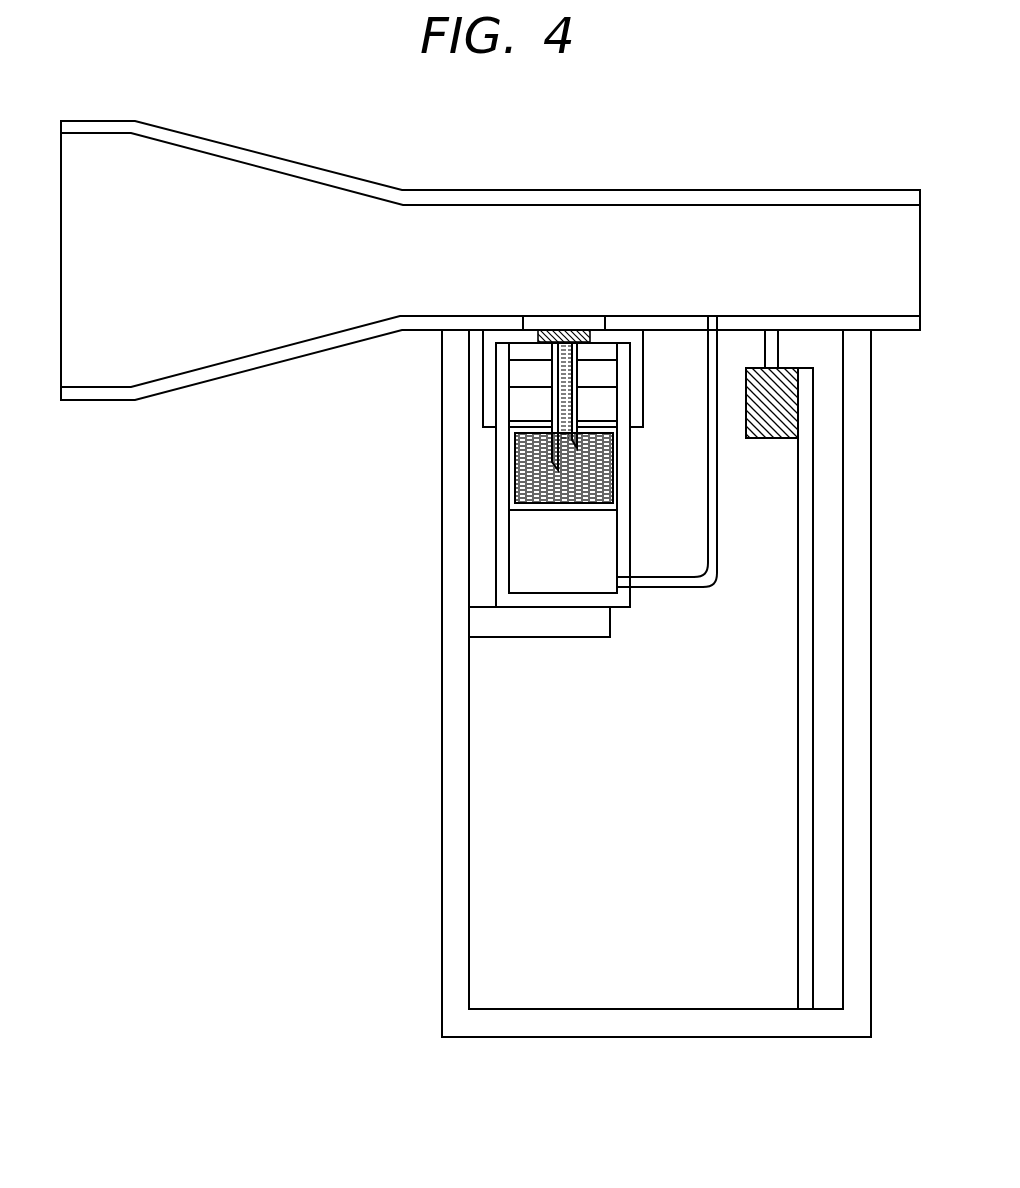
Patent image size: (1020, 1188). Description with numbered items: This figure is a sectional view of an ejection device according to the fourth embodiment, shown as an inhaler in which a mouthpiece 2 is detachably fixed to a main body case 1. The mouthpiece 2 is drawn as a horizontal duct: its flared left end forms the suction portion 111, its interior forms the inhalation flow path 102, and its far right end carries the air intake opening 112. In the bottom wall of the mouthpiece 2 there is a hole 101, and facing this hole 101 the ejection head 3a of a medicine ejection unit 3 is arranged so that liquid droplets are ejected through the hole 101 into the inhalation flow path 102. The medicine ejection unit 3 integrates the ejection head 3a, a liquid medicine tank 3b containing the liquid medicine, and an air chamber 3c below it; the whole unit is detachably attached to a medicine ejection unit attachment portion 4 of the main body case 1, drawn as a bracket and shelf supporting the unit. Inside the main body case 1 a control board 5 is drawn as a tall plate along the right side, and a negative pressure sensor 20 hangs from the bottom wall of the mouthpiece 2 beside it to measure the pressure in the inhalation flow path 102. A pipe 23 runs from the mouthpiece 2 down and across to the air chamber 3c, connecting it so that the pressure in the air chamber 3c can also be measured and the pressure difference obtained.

The main body case 1 is at (447, 870).
The mouthpiece 2 is at (318, 177).
The medicine ejection unit 3 is at (346, 381).
The ejection head 3a is at (536, 331).
The liquid medicine tank 3b is at (520, 451).
The air chamber 3c is at (528, 529).
The medicine ejection unit attachment portion 4 is at (500, 541).
The control board 5 is at (807, 724).
The negative pressure sensor 20 is at (783, 427).
The pipe 23 is at (713, 552).
The hole 101 is at (552, 314).
The inhalation flow path 102 is at (603, 225).
The suction portion 111 is at (115, 358).
The air intake opening 112 is at (852, 228).